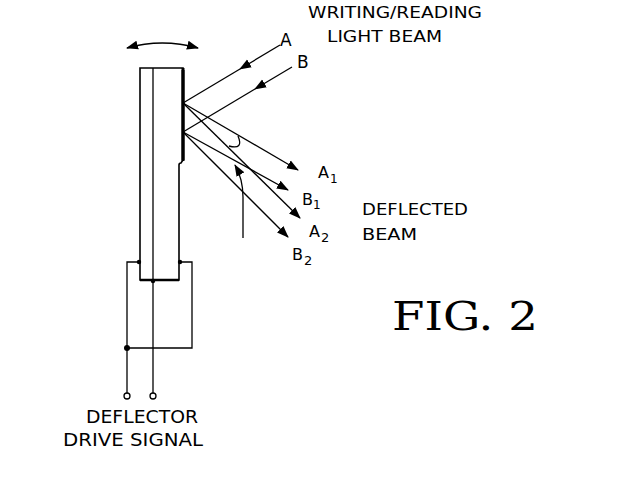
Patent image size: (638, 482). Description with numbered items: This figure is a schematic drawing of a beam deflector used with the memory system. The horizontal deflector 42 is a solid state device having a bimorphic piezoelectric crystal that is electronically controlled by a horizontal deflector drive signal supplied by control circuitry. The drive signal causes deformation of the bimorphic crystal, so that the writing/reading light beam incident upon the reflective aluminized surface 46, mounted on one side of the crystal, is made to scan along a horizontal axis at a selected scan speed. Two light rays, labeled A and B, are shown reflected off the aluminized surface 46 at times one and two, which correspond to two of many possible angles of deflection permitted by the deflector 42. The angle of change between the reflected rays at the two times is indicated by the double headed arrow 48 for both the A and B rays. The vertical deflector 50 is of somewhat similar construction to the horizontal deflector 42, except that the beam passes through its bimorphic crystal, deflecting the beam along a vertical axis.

The horizontal deflector 42 is at (125, 161).
The vertical deflector 50 is at (128, 165).
The reflective aluminized surface 46 is at (183, 72).
The double headed arrow 48 is at (238, 138).